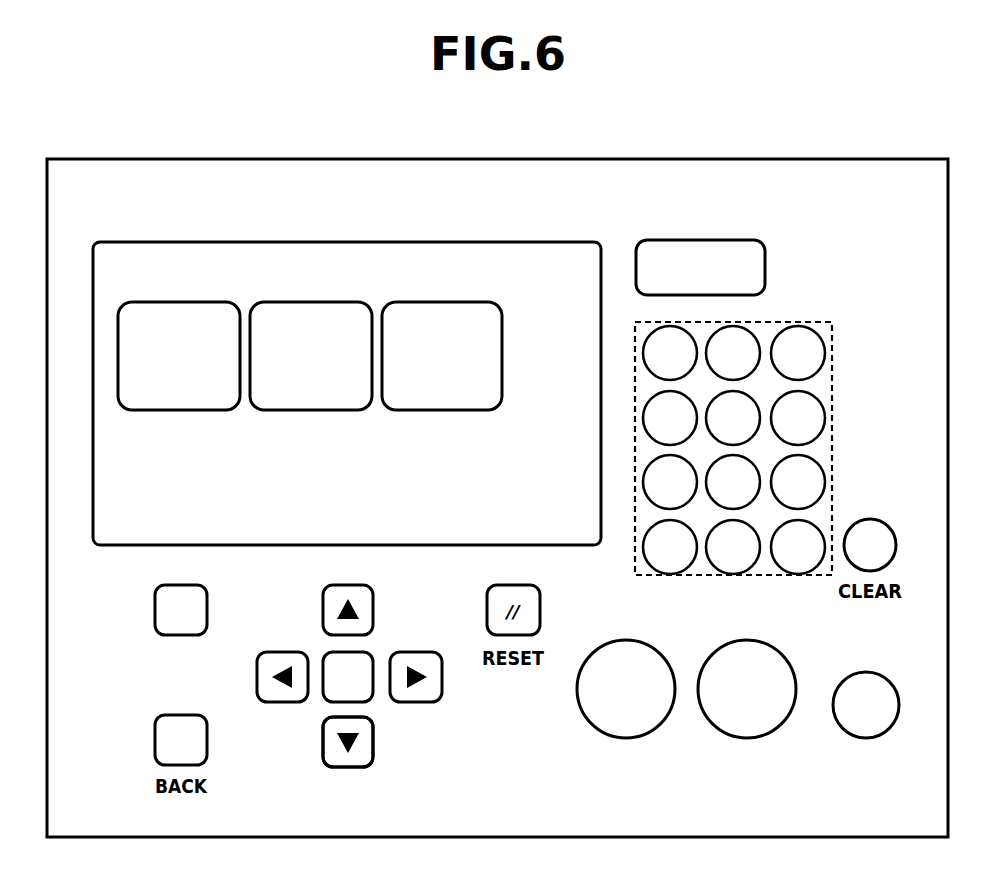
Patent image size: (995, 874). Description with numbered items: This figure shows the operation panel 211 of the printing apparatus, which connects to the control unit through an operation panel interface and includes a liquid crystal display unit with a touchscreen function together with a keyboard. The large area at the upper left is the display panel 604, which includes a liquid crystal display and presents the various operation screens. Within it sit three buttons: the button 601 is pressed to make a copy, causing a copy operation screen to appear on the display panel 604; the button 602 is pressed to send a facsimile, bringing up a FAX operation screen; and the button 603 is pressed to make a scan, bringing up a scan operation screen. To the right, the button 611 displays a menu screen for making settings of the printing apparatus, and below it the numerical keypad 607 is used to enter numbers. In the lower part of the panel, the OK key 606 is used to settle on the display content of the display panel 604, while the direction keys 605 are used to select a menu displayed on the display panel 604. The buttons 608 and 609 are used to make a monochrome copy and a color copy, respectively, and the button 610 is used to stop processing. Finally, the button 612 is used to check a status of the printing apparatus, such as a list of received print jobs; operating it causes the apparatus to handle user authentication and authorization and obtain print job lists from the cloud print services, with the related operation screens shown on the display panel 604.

The operation panel 211 is at (528, 160).
The display panel 604 is at (251, 242).
The button 601 is at (176, 302).
The button 602 is at (309, 302).
The button 603 is at (440, 302).
The button 611 is at (695, 240).
The numerical keypad 607 is at (813, 321).
The button 612 is at (153, 610).
The OK key 606 is at (374, 655).
The direction keys 605 is at (375, 740).
The button 608 is at (626, 640).
The button 609 is at (746, 640).
The button 610 is at (865, 672).